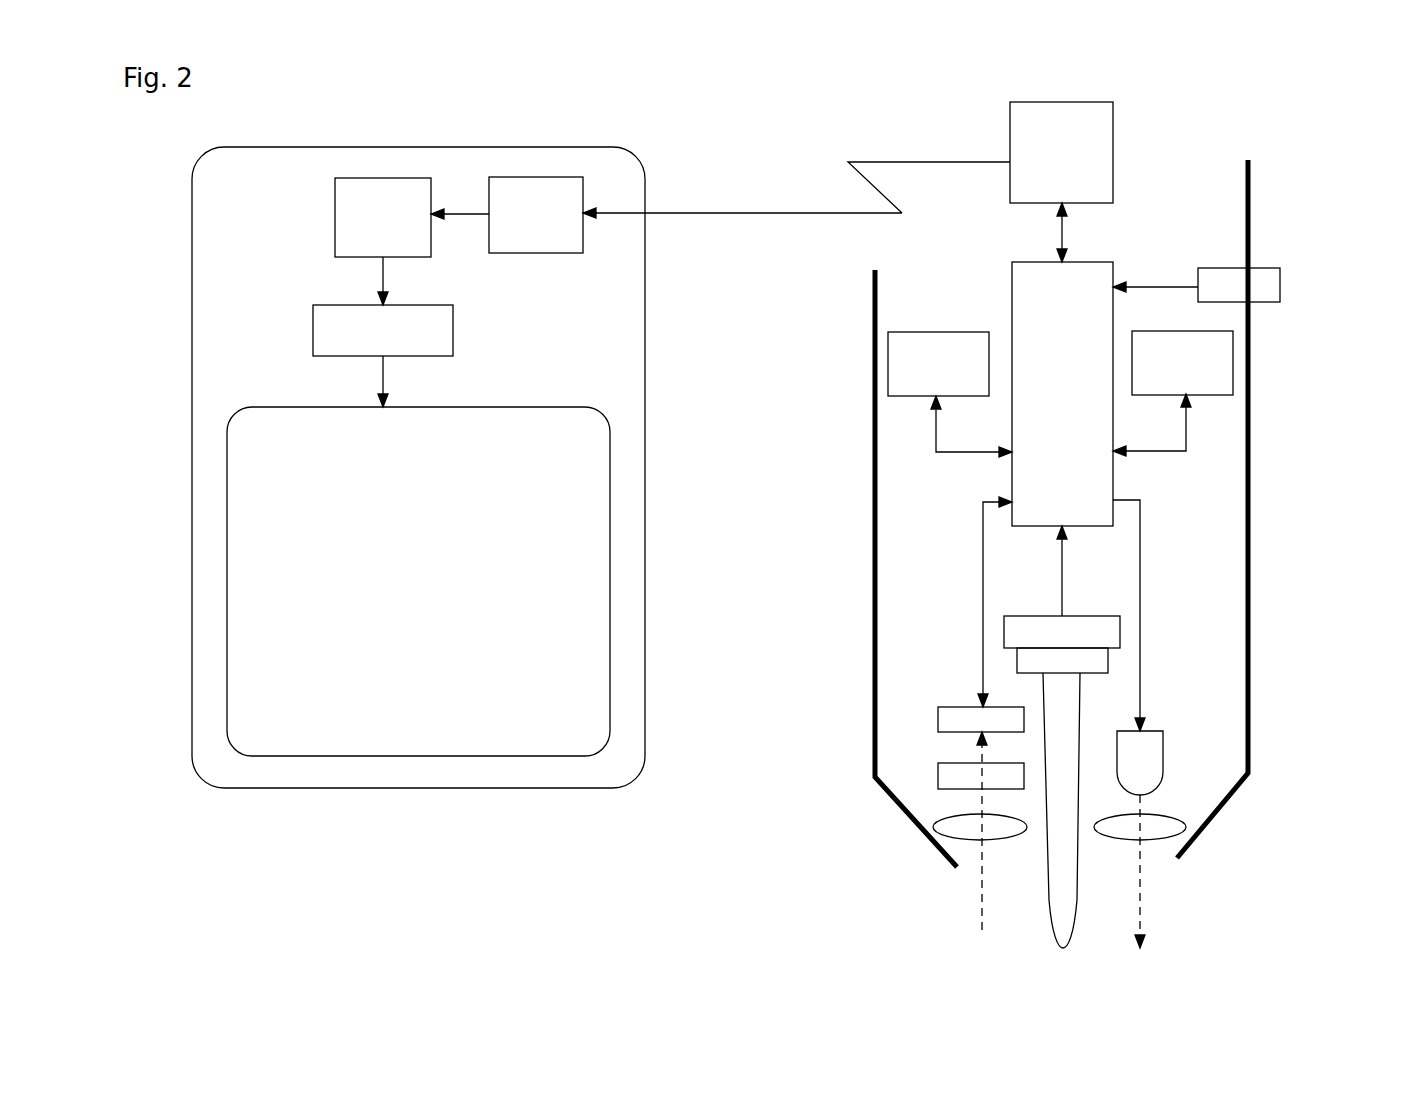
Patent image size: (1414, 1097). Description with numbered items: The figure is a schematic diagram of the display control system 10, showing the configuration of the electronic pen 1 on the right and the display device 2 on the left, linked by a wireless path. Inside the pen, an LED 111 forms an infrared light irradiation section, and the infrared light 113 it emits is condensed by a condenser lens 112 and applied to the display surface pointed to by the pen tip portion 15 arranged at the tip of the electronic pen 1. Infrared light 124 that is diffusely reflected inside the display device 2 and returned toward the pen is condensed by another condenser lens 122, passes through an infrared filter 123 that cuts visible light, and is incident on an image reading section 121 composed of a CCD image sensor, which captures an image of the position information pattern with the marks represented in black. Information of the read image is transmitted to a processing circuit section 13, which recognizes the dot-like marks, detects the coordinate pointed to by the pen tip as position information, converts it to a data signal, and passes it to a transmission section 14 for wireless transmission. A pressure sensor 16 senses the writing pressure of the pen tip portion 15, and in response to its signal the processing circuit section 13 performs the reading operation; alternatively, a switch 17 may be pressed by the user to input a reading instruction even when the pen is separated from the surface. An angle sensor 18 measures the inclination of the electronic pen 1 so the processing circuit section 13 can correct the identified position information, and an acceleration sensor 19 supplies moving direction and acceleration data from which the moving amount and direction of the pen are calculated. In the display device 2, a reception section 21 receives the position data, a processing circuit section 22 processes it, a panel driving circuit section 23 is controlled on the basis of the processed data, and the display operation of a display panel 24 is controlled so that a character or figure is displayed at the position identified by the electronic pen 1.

The liquid analyzing system 10 is at (782, 76).
The display device 2 is at (330, 788).
The display panel 24 is at (610, 553).
The processing circuit section 22 is at (400, 178).
The reception section 21 is at (528, 177).
The panel driving circuit section 23 is at (313, 330).
The electronic pen 1 is at (1252, 570).
The transmission section 14 is at (1085, 140).
The processing circuit section 13 is at (1098, 483).
The switch 17 is at (1273, 280).
The acceleration sensor 19 is at (1220, 362).
The angle sensor 18 is at (895, 365).
The pressure sensor 16 is at (1098, 635).
The pen tip portion 15 is at (1066, 895).
The image reading section 121 is at (950, 718).
The infrared filter 123 is at (950, 775).
The condenser lens 122 is at (958, 827).
The infrared light 124 is at (980, 873).
The LED 111 is at (1163, 752).
The condenser lens 112 is at (1165, 823).
The infrared light 113 is at (1140, 883).